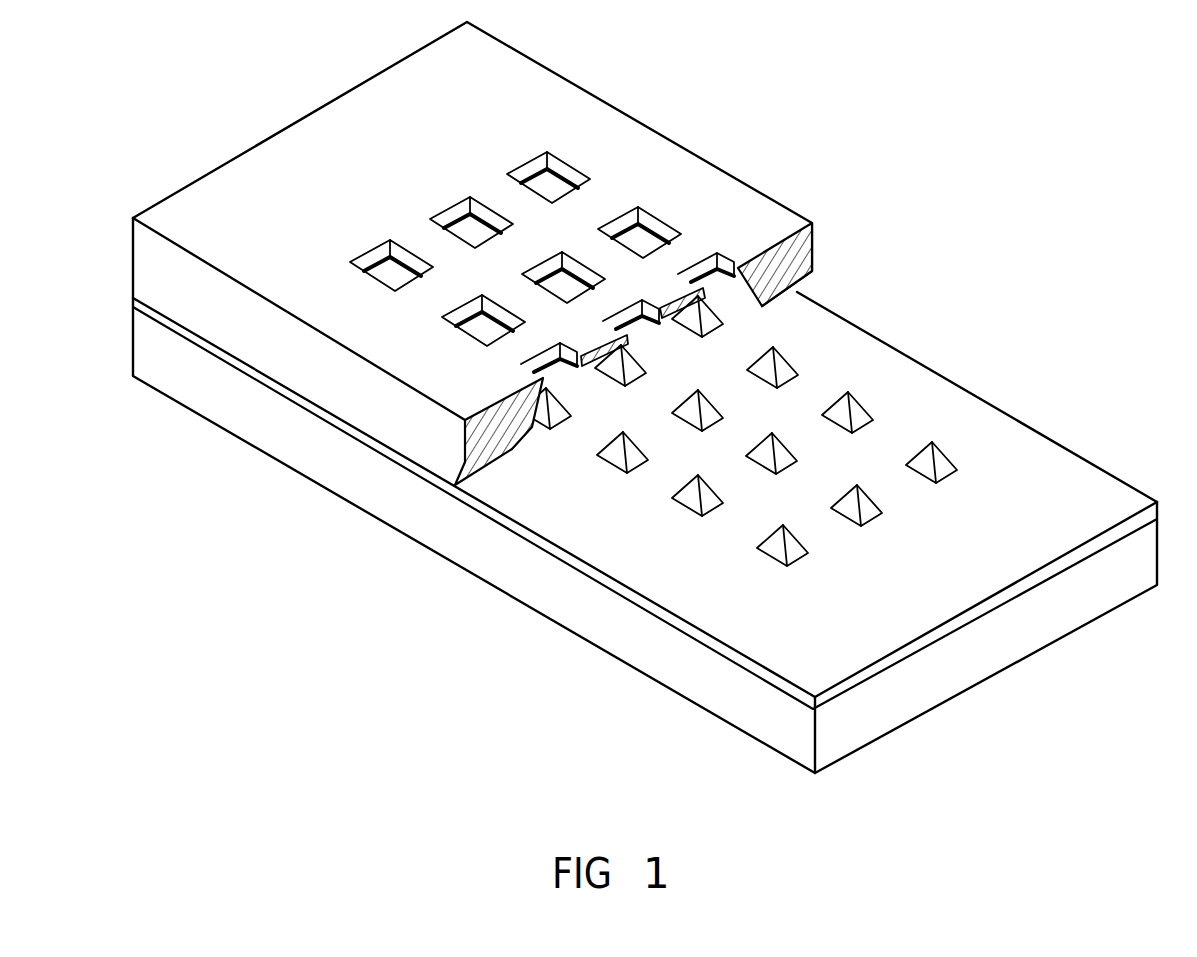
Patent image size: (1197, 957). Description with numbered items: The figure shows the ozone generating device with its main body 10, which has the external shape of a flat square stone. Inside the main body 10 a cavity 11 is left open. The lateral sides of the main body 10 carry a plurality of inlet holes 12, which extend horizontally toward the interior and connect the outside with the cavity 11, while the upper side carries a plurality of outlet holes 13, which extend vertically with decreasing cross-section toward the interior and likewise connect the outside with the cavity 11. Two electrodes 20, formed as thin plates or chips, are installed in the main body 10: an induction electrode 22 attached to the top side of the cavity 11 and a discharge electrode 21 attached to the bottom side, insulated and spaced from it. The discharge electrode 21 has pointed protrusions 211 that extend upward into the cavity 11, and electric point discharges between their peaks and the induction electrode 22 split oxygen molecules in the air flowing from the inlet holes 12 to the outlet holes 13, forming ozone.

The main body 10 is at (338, 543).
The cavity 11 is at (730, 304).
The inlet holes 12 is at (495, 457).
The outlet holes 13 is at (545, 267).
The electrodes 20 is at (877, 676).
The discharge electrode 21 is at (697, 603).
The induction electrode 22 is at (777, 306).
The pointed protrusions 211 is at (932, 445).